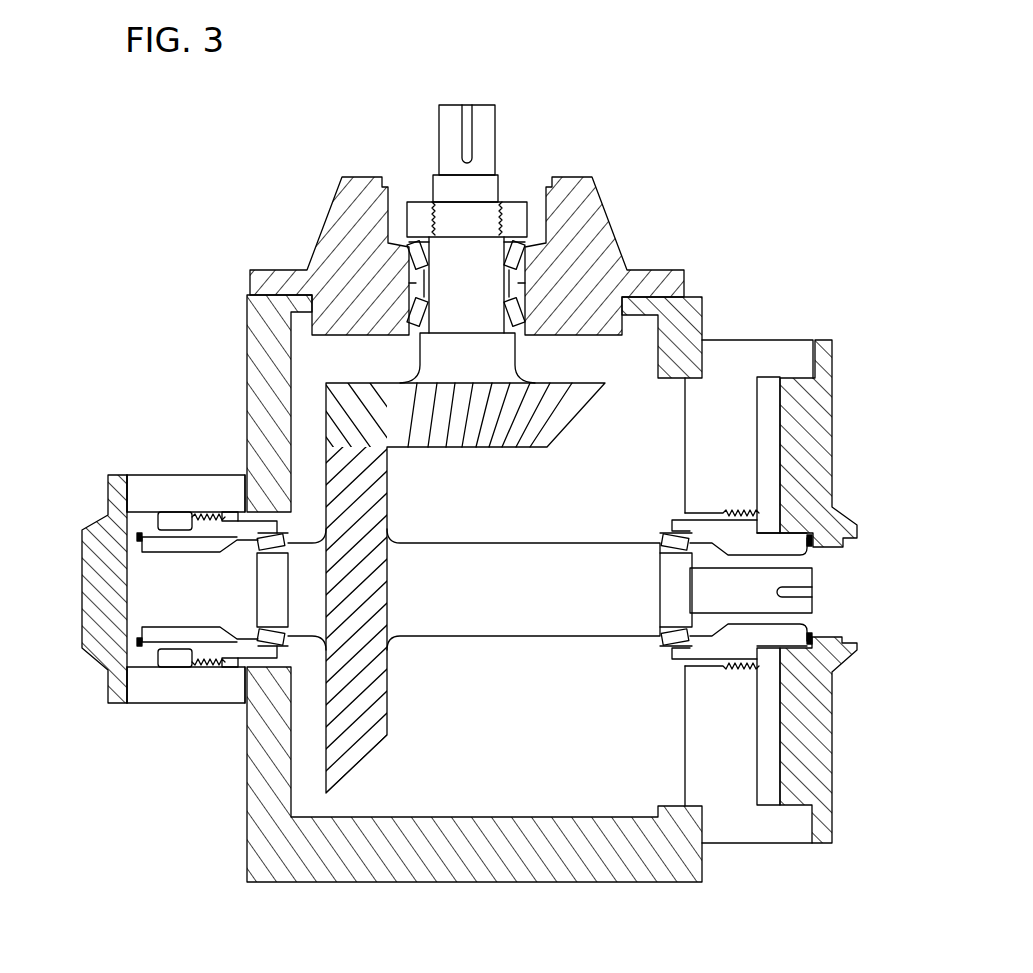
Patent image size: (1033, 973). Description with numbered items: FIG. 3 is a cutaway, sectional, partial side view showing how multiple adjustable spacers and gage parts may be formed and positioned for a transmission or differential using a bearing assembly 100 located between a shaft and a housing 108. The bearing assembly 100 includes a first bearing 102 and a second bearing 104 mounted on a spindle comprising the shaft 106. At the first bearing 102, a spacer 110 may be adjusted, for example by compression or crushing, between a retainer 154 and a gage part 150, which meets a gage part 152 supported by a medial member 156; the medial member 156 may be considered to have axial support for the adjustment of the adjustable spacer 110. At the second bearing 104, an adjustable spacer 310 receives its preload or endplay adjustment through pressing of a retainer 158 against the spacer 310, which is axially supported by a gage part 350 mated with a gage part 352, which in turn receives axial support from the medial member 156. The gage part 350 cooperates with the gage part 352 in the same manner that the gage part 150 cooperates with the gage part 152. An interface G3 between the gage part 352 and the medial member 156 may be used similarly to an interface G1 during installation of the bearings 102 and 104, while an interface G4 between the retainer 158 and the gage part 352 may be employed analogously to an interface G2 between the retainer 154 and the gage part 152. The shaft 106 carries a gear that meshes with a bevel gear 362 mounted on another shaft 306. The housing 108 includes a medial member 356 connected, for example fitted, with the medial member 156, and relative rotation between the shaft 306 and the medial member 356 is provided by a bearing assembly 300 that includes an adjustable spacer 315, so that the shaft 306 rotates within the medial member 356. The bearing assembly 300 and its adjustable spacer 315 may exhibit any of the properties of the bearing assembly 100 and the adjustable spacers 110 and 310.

The bearing assembly 100 is at (857, 594).
The first bearing 102 is at (656, 531).
The second bearing 104 is at (280, 535).
The shaft 106 is at (507, 536).
The housing 108 is at (252, 933).
The spacer 110 is at (812, 641).
The gage part 150 is at (814, 552).
The gage part 152 is at (773, 833).
The retainer 154 is at (840, 420).
The medial member 156 is at (497, 880).
The retainer 158 is at (77, 590).
The bearing assembly 300 is at (517, 185).
The shaft 306 is at (418, 350).
The adjustable spacer 310 is at (139, 630).
The adjustable spacer 315 is at (506, 272).
The gage part 350 is at (172, 548).
The gage part 352 is at (212, 697).
The medial member 356 is at (600, 204).
The bevel gear 362 is at (565, 413).
The interface G1 is at (703, 333).
The interface G2 is at (814, 333).
The interface G3 is at (244, 470).
The interface G4 is at (124, 470).